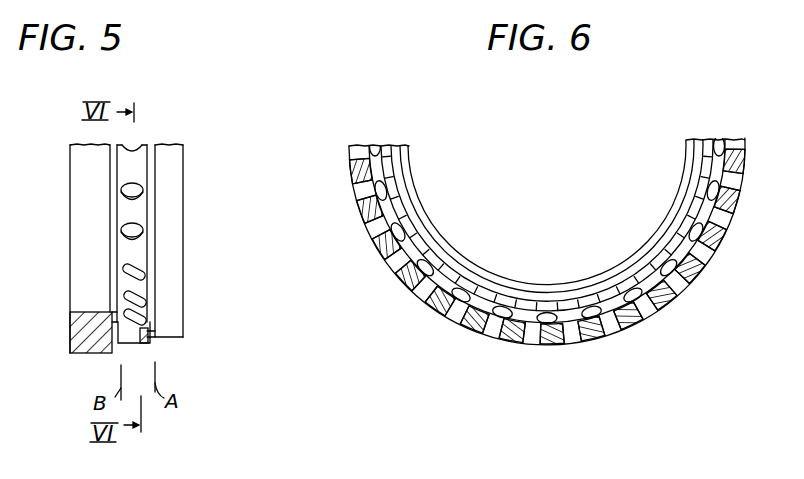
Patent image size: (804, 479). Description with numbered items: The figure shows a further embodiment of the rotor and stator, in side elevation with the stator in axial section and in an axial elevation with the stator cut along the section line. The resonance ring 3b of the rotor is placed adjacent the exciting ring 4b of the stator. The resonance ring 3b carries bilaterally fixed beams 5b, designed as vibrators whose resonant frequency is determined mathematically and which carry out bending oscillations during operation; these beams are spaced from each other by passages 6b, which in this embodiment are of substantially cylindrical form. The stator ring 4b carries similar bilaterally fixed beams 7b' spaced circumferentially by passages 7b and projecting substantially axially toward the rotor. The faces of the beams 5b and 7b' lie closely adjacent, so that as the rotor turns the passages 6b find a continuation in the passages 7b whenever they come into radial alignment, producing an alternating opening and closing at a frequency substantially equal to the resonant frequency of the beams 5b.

In FIG. 5, the resonance ring 3b is at (183, 290).
In FIG. 6, the resonance ring 3b is at (452, 266).
In FIG. 5, the exciting ring 4b is at (78, 322).
In FIG. 6, the exciting ring 4b is at (472, 327).
In FIG. 6, the bilaterally fixed beam 5b is at (487, 293).
In FIG. 5, the passage 6b is at (140, 232).
In FIG. 6, the passage 6b is at (393, 233).
In FIG. 5, the passage 7b is at (112, 354).
In FIG. 6, the passage 7b is at (546, 273).
In FIG. 6, the bilaterally fixed beam 7b' is at (546, 270).